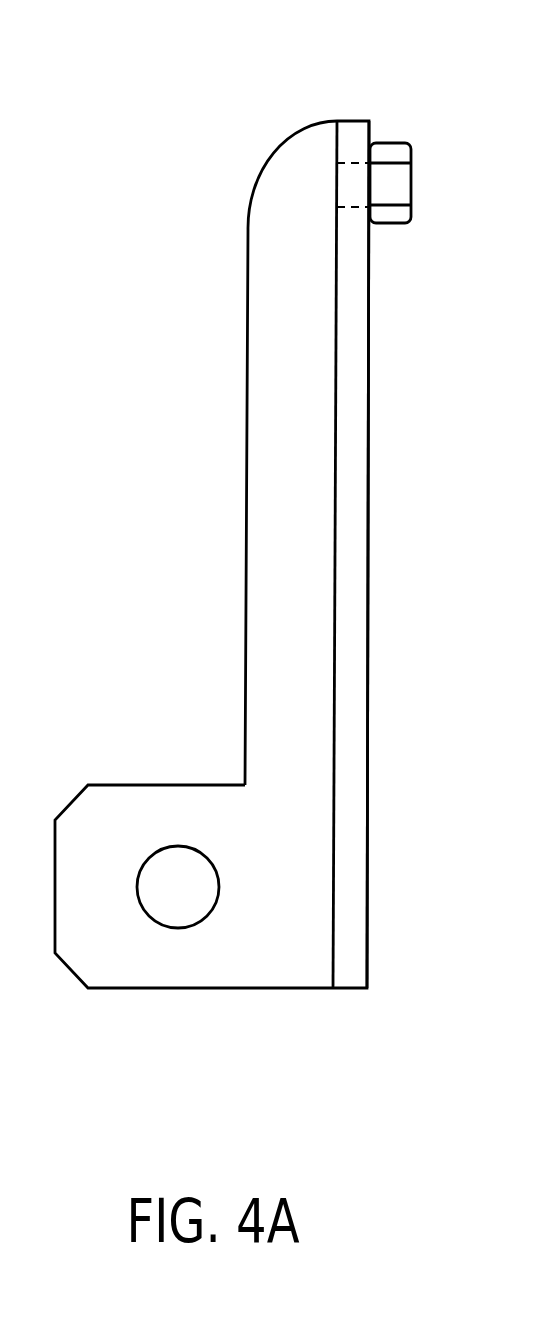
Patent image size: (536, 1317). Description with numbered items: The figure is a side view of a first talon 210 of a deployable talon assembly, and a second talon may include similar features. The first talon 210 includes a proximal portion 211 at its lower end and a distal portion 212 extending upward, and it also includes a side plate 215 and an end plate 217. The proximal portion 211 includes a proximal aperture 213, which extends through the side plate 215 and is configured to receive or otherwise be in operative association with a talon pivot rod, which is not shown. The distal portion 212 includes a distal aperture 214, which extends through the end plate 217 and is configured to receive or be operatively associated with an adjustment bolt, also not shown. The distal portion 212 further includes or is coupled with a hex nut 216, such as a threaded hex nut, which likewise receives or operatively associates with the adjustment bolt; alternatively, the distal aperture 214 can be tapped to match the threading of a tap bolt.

The first talon 210 is at (289, 570).
The proximal portion 211 is at (295, 903).
The distal portion 212 is at (212, 219).
The proximal aperture 213 is at (168, 845).
The distal aperture 214 is at (401, 500).
The side plate 215 is at (318, 534).
The hex nut 216 is at (405, 142).
The end plate 217 is at (372, 598).